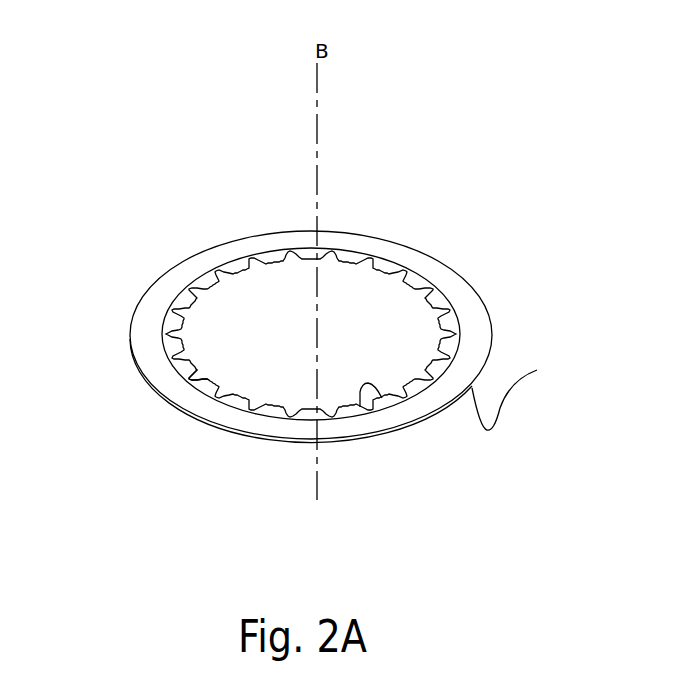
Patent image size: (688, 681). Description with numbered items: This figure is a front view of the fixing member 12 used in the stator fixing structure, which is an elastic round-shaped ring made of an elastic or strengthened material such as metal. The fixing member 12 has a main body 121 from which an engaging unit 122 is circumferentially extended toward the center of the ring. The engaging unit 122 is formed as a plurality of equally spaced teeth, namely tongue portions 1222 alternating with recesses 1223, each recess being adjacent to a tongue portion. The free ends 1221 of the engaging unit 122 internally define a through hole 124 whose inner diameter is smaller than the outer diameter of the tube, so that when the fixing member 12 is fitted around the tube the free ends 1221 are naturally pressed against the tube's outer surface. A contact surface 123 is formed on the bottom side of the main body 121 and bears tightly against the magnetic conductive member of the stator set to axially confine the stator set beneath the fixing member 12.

The fixing member 12 is at (433, 141).
The main body 121 is at (493, 330).
The engaging unit 122 is at (423, 288).
The contact surface 123 is at (537, 370).
The through hole 124 is at (219, 304).
The free end 1221 is at (362, 405).
The tongue portion 1222 is at (203, 380).
The recess 1223 is at (190, 371).